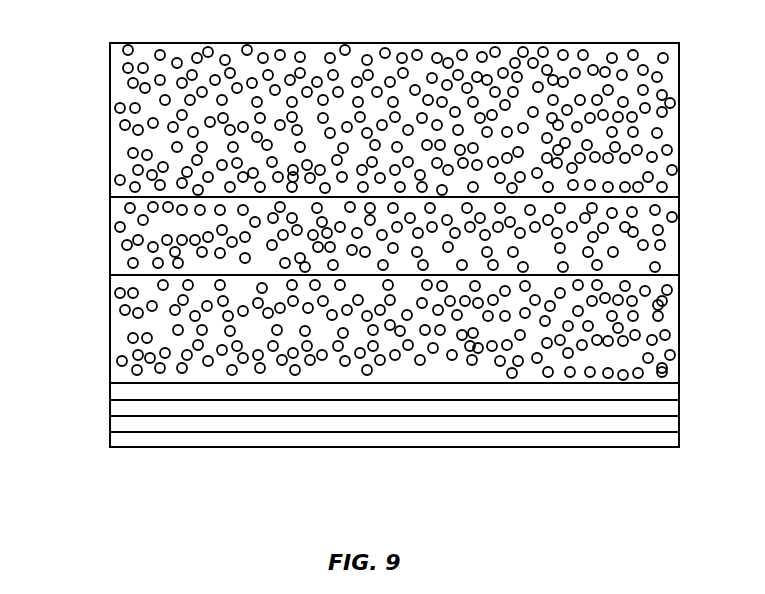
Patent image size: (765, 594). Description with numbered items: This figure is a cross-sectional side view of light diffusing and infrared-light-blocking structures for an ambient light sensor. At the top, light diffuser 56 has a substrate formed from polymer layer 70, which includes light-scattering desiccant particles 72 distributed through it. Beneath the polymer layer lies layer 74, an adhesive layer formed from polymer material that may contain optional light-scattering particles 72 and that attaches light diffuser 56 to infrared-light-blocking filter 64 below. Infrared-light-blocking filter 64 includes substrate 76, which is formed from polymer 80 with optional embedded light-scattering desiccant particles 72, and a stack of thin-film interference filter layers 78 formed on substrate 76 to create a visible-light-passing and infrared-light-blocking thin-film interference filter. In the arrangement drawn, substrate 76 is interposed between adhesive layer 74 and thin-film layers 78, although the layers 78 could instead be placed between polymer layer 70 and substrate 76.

The light diffuser 56 is at (60, 43).
The infrared-light-blocking filter 64 is at (698, 275).
The polymer layer 70 is at (508, 49).
The light-scattering desiccant particles 72 is at (657, 77).
The adhesive layer 74 is at (118, 218).
The substrate 76 is at (60, 278).
The thin-film interference filter layers 78 is at (515, 408).
The polymer 80 is at (127, 342).